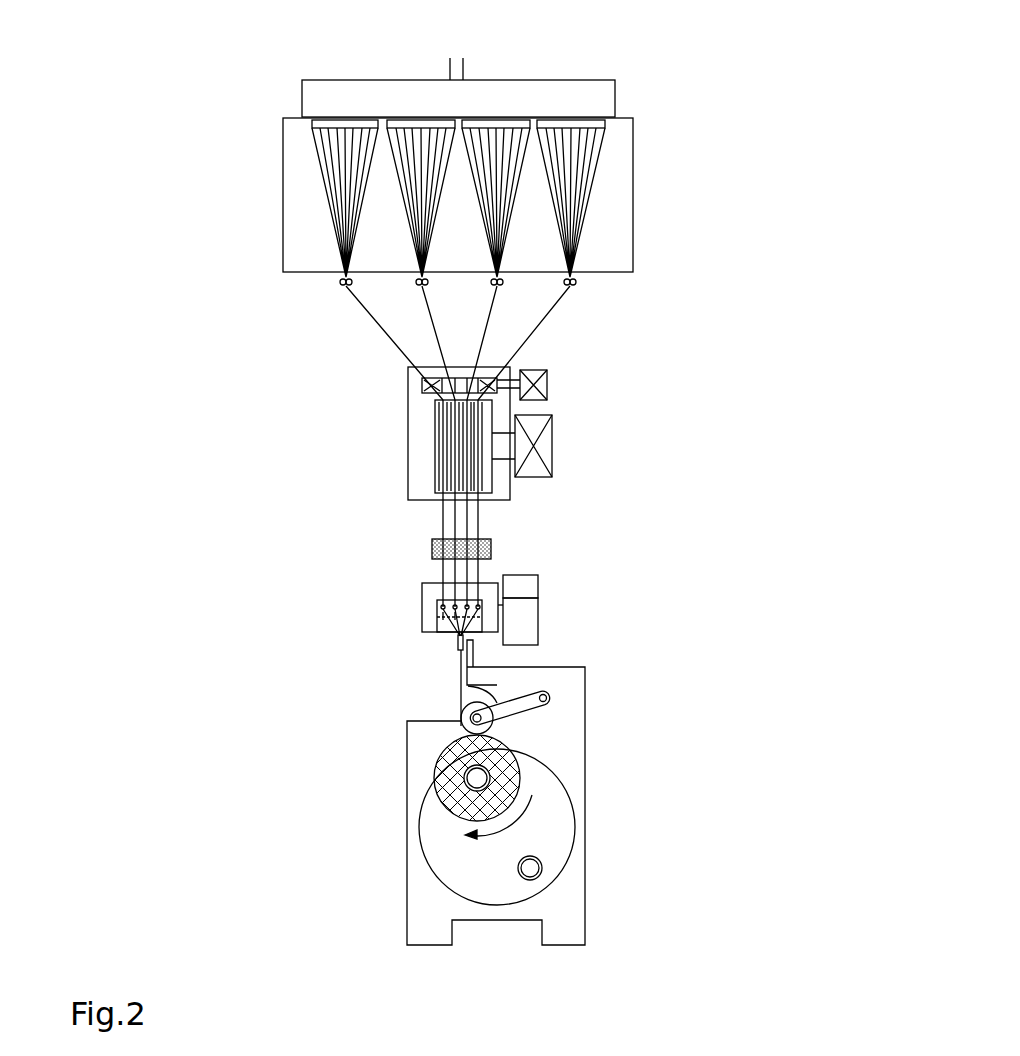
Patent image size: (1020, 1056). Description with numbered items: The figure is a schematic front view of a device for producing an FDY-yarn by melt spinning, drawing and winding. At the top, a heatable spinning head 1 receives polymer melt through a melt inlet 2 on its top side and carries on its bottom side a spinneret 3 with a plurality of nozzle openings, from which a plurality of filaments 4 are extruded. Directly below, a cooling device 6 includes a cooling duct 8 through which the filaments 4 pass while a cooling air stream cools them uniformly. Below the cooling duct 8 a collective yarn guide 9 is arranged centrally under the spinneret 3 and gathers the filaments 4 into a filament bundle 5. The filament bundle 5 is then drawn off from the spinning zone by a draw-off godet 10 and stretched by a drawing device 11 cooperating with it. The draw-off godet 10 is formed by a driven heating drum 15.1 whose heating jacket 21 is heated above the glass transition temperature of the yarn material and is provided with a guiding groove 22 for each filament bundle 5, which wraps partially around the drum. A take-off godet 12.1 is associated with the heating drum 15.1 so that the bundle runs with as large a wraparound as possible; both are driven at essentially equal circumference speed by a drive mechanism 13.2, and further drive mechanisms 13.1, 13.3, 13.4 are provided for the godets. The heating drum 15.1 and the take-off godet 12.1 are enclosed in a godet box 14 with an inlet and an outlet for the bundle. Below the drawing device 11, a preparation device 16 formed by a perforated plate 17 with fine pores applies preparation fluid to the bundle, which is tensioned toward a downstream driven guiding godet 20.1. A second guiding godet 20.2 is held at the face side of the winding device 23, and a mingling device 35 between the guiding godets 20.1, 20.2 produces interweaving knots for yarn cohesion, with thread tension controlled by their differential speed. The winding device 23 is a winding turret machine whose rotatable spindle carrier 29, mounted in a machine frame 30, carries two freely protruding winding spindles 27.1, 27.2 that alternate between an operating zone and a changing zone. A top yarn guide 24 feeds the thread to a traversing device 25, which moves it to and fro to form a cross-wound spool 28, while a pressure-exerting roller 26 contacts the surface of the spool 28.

The spinning head 1 is at (313, 98).
The melt inlet 2 is at (437, 57).
The spinneret 3 is at (302, 113).
The filaments 4 is at (320, 171).
The filament bundle 5 is at (368, 316).
The cooling device 6 is at (670, 200).
The cooling duct 8 is at (303, 227).
The collective yarn guide 9 is at (338, 282).
The draw-off godet 10 is at (180, 435).
The drawing device 11 is at (122, 383).
The take-off godet 12.1 is at (408, 398).
The drive mechanism 13.1 is at (542, 443).
The drive mechanism 13.2 is at (547, 380).
The drive mechanism 13.3 is at (530, 587).
The drive 13.4 is at (525, 623).
The godet box 14 is at (513, 492).
The heating drum 15.1 is at (437, 428).
The preparation device 16 is at (493, 548).
The perforated plate 17 is at (432, 549).
The guiding godet 20.1 is at (423, 593).
The guiding godet 20.2 is at (423, 625).
The heating jacket 21 is at (440, 458).
The guiding groove 22 is at (445, 495).
The winding device 23 is at (512, 997).
The top yarn guide 24 is at (457, 633).
The traversing device 25 is at (475, 675).
The pressure-exerting roller 26 is at (480, 729).
The winding spindle 27.1 is at (477, 778).
The winding spindle 27.2 is at (532, 868).
The spool 28 is at (437, 770).
The spindle carrier 29 is at (452, 843).
The machine frame 30 is at (427, 902).
The mingling device 35 is at (448, 610).